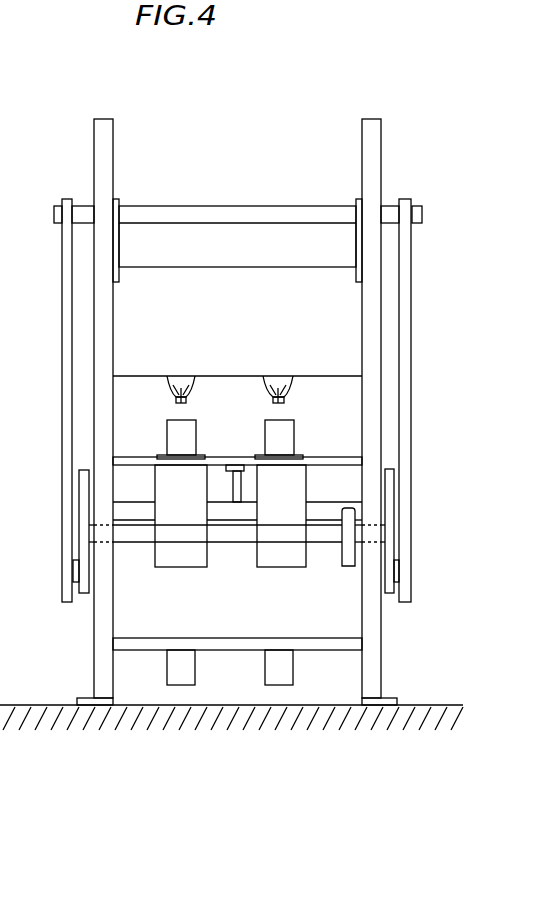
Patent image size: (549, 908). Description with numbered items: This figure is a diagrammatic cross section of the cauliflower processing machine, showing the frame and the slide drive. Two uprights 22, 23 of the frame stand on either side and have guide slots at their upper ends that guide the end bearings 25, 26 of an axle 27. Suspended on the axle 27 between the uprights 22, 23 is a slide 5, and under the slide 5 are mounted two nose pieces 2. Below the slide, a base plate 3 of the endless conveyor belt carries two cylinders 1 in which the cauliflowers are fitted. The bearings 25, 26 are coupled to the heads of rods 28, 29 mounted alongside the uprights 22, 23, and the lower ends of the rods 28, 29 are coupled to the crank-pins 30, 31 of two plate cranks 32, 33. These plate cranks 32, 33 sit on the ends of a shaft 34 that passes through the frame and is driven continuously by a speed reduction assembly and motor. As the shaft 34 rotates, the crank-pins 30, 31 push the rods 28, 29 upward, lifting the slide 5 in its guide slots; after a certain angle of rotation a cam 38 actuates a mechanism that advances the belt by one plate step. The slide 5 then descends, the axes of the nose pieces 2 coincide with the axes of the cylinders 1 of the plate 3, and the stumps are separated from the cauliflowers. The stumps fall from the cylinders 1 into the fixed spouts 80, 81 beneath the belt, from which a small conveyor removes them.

The cylinder 1 is at (190, 437).
The nose piece 2 is at (189, 383).
The base plate 3 is at (222, 464).
The slide 5 is at (140, 338).
The upright 22 is at (108, 427).
The upright 23 is at (370, 427).
The end bearing 25 is at (86, 212).
The end bearing 26 is at (392, 212).
The axle 27 is at (207, 212).
The rod 28 is at (67, 340).
The rod 29 is at (407, 340).
The crank-pin 30 is at (75, 578).
The crank-pin 31 is at (395, 575).
The plate crank 32 is at (83, 516).
The plate crank 33 is at (394, 518).
The shaft 34 is at (236, 527).
The cam 38 is at (348, 554).
The fixed spout 80 is at (178, 558).
The fixed spout 81 is at (285, 558).